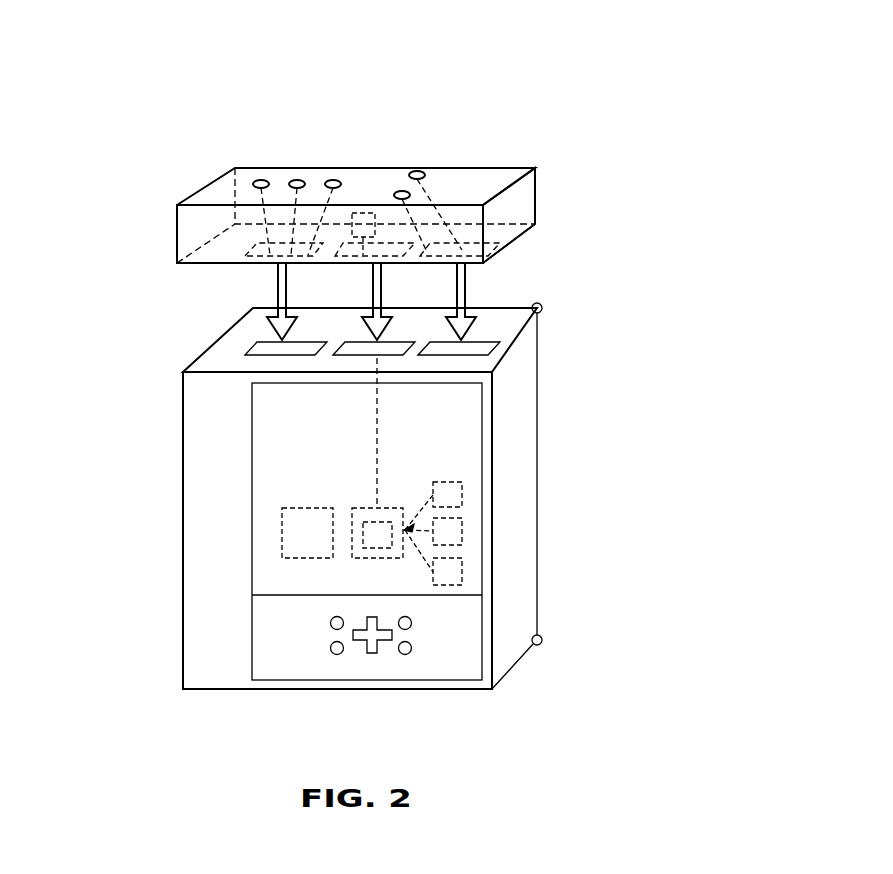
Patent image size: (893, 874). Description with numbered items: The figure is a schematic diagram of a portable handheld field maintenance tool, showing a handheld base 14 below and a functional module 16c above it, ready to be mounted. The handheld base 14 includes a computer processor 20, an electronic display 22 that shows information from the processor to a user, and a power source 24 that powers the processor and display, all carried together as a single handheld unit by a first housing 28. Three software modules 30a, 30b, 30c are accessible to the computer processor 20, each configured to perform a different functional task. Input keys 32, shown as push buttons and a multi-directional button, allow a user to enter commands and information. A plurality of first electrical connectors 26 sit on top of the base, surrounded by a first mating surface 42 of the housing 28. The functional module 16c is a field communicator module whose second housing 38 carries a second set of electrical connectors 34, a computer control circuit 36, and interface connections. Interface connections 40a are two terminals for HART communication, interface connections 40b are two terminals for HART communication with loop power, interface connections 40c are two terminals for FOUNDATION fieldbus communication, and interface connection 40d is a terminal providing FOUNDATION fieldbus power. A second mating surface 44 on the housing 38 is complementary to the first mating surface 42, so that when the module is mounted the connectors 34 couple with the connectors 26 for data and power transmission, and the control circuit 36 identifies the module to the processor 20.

The handheld base 14 is at (359, 525).
The functional module 16c is at (373, 165).
The computer processor 20 is at (367, 507).
The electronic display 22 is at (268, 413).
The power source 24 is at (282, 535).
The first electrical connectors 26 is at (337, 355).
The first housing 28 is at (538, 415).
The software module 30a is at (462, 488).
The software module 30b is at (462, 526).
The software module 30c is at (462, 570).
The input keys 32 is at (365, 643).
The second set of electrical connectors 34 is at (253, 243).
The computer control circuit 36 is at (367, 212).
The second housing 38 is at (481, 167).
The interface connections 40a is at (261, 180).
The interface connections 40b is at (297, 180).
The interface connections 40c is at (333, 180).
The interface connection 40d is at (417, 171).
The first mating surface 42 is at (510, 331).
The second mating surface 44 is at (514, 241).